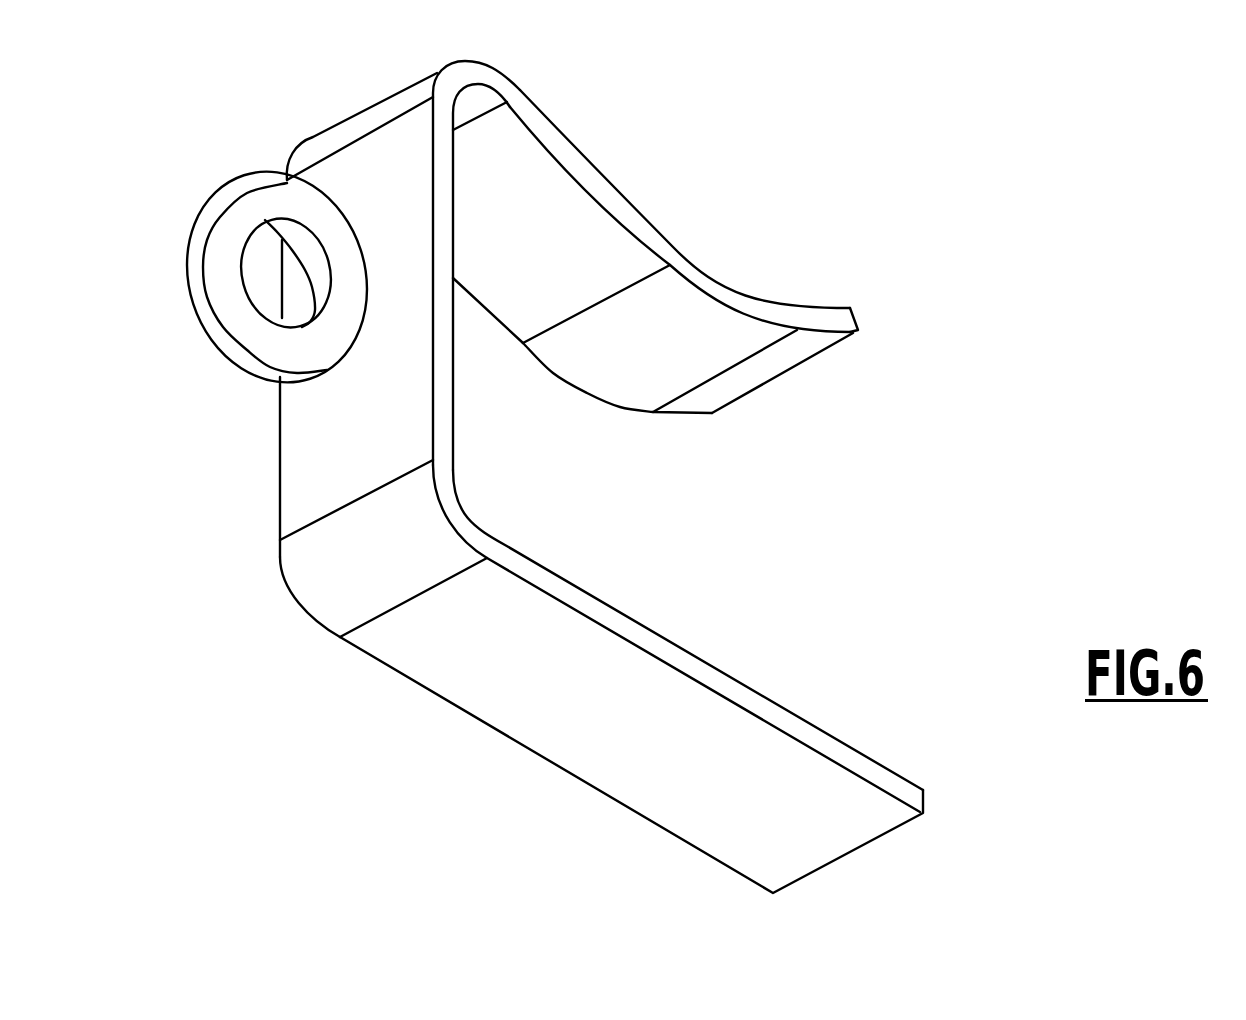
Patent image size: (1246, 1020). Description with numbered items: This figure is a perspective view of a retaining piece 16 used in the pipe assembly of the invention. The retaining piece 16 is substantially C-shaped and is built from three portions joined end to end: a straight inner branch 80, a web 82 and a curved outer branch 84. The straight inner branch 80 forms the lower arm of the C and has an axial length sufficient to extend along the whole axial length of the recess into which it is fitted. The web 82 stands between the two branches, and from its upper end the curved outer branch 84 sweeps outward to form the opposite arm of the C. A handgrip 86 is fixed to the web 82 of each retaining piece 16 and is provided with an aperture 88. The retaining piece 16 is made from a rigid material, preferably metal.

The retaining piece 16 is at (684, 163).
The inner branch 80 is at (587, 740).
The web 82 is at (377, 177).
The outer branch 84 is at (620, 380).
The handgrip 86 is at (255, 317).
The aperture 88 is at (251, 248).